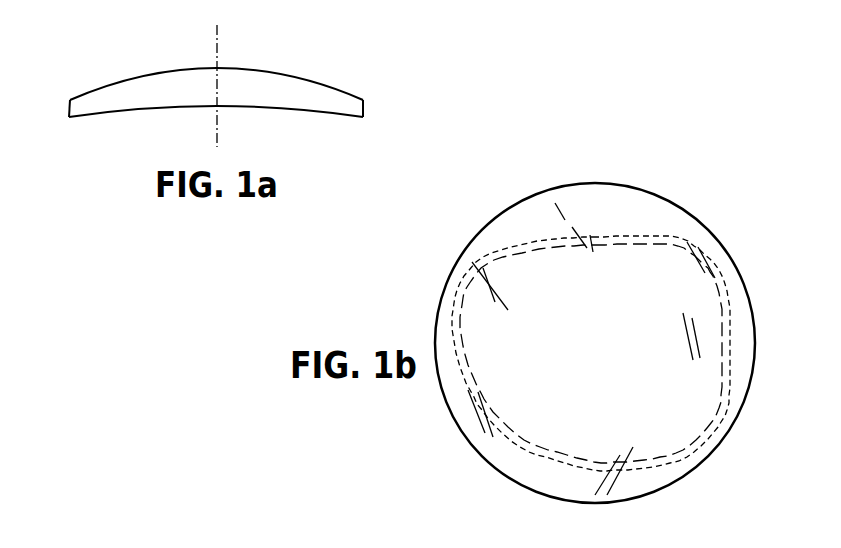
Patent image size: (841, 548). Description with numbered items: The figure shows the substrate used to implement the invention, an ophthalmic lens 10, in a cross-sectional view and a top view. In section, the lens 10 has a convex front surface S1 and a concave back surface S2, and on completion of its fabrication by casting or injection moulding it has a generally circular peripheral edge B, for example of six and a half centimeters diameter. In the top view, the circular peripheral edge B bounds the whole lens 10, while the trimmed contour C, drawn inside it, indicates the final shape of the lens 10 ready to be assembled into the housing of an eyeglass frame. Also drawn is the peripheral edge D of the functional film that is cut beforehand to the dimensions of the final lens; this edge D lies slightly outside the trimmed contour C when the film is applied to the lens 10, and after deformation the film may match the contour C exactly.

In FIG. 1A, the ophthalmic lens 10 is at (219, 99).
In FIG. 1B, the ophthalmic lens 10 is at (575, 324).
In FIG. 1A, the front surface S1 is at (102, 86).
In FIG. 1A, the back surface S2 is at (100, 115).
In FIG. 1A, the circular peripheral edge B is at (367, 105).
In FIG. 1B, the circular peripheral edge B is at (488, 226).
In FIG. 1B, the peripheral edge of the functional film D is at (631, 236).
In FIG. 1B, the trimmed contour C is at (652, 243).